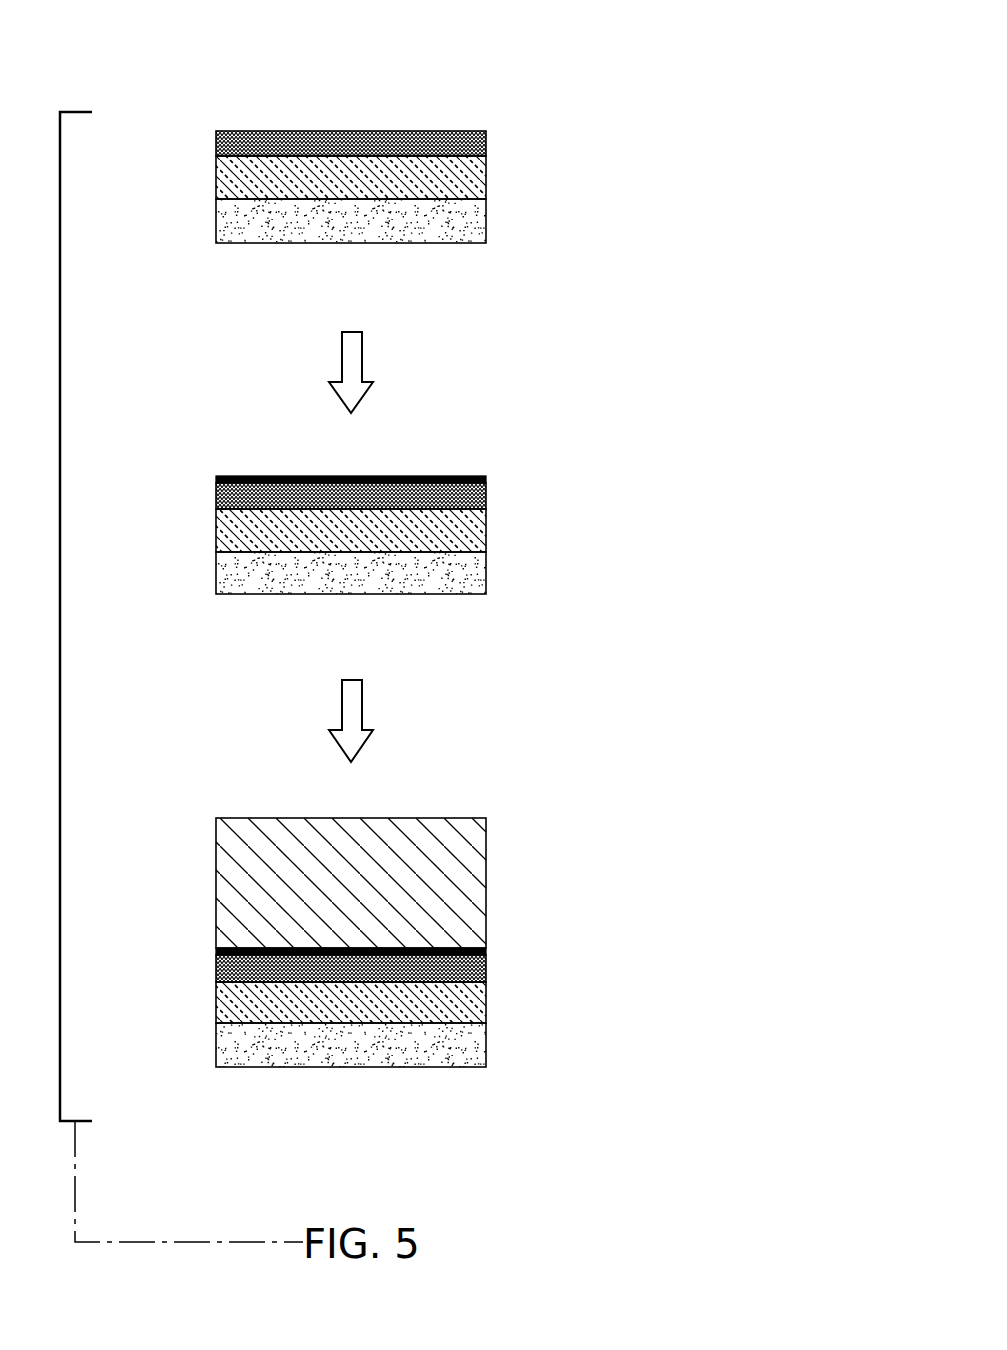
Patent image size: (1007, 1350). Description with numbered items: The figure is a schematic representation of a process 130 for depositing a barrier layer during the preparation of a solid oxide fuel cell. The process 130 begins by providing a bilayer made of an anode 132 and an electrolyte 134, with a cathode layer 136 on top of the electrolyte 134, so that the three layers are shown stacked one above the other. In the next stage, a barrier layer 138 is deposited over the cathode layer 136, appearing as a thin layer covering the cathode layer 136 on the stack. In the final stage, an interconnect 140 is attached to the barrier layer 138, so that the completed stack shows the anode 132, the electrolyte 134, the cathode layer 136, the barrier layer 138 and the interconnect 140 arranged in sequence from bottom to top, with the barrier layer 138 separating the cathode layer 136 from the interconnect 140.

The process 130 is at (568, 45).
The anode 132 is at (486, 220).
The electrolyte 134 is at (486, 184).
The cathode layer 136 is at (486, 146).
The barrier layer 138 is at (488, 476).
The interconnect 140 is at (486, 874).